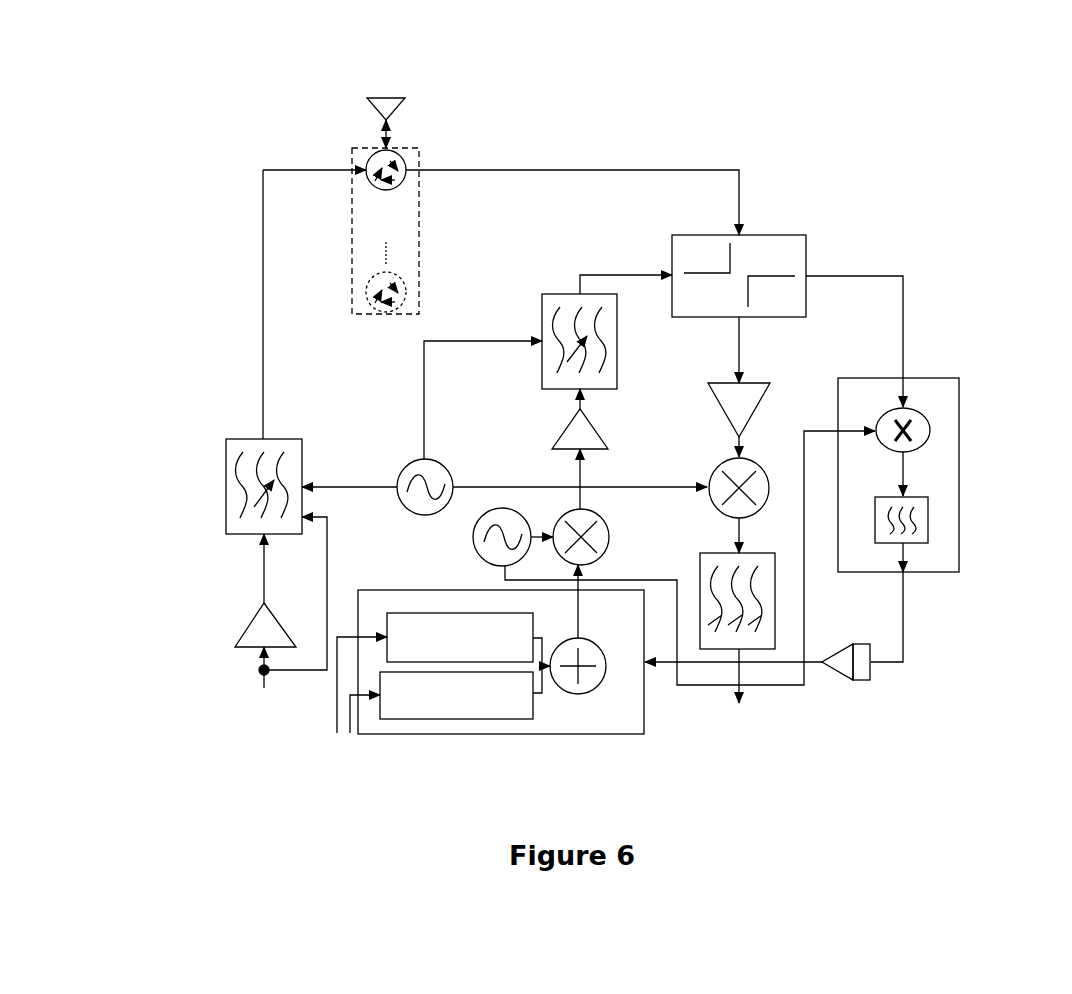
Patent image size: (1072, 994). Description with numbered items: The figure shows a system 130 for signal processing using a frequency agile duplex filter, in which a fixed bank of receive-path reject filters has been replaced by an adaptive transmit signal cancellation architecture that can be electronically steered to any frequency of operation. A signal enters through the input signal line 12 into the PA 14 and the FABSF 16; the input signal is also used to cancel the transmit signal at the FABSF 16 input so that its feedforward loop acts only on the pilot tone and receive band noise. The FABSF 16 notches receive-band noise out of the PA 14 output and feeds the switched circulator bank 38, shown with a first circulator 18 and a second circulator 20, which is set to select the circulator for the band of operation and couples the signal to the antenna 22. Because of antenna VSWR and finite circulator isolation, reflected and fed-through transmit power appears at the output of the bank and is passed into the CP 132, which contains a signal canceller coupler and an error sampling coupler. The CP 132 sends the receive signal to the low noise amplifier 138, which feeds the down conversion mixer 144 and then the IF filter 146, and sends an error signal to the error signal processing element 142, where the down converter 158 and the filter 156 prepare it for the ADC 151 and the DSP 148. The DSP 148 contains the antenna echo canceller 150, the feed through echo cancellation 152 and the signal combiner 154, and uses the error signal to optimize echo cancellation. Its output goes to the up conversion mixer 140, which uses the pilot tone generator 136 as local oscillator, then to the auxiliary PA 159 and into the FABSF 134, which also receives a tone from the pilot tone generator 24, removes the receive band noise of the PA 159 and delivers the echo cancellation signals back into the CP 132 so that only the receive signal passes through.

The input signal line 12 is at (258, 669).
The PA 14 is at (254, 622).
The FABSF 16 is at (226, 490).
The first circulator 18 is at (372, 150).
The second circulator 20 is at (382, 297).
The antenna 22 is at (403, 98).
The pilot tone generator 24 is at (407, 462).
The switched circulator bank 38 is at (352, 277).
The system 130 is at (936, 161).
The CP 132 is at (795, 234).
The FABSF 134 is at (548, 292).
The pilot tone generator 136 is at (528, 510).
The low noise amplifier 138 is at (758, 410).
The up conversion mixer 140 is at (607, 522).
The error signal processing element 142 is at (959, 532).
The down conversion mixer 144 is at (713, 507).
The IF filter 146 is at (776, 607).
The DSP 148 is at (385, 733).
The antenna echo canceller 150 is at (440, 660).
The ADC 151 is at (870, 667).
The feed through echo cancellation 152 is at (482, 718).
The signal combiner 154 is at (580, 693).
The filter 156 is at (928, 522).
The down converter 158 is at (930, 440).
The PA 159 is at (568, 418).